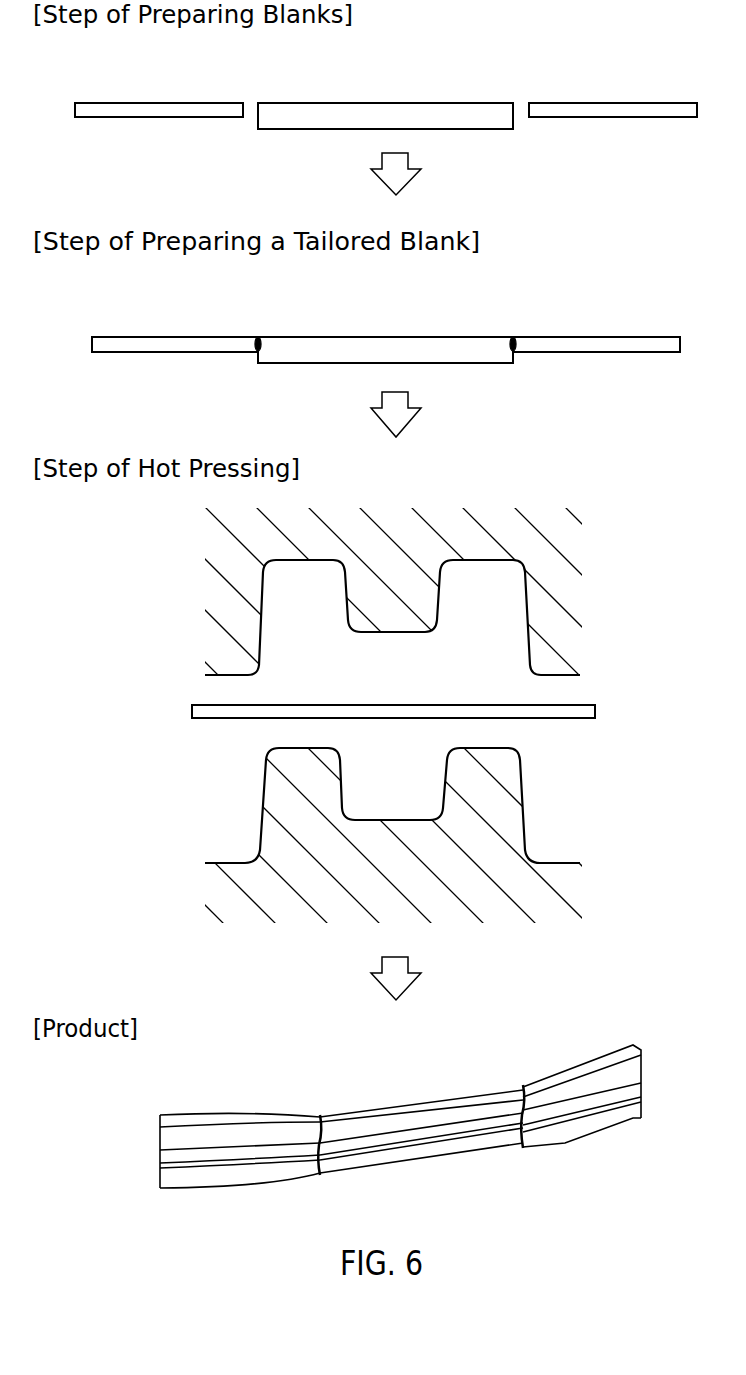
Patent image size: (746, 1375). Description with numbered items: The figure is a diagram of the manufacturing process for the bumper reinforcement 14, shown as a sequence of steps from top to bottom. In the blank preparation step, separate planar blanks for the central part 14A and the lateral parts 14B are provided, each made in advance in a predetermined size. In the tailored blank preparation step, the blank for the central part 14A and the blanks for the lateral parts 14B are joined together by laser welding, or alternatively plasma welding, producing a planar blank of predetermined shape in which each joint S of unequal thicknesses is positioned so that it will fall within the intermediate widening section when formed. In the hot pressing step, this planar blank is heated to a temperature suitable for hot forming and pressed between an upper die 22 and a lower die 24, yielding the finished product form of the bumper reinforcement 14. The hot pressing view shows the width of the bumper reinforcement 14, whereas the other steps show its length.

The bumper reinforcement 14 is at (386, 350).
The central part 14A is at (405, 102).
The lateral parts 14B is at (163, 102).
The joint S is at (258, 337).
The upper die 22 is at (550, 608).
The lower die 24 is at (560, 882).